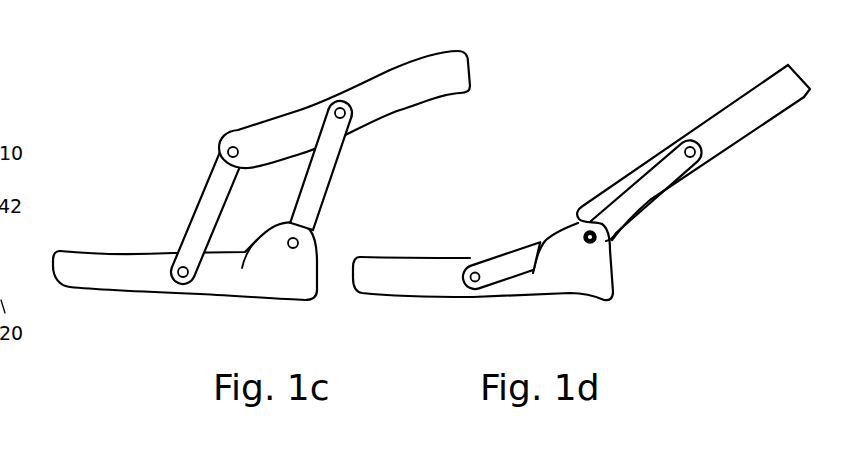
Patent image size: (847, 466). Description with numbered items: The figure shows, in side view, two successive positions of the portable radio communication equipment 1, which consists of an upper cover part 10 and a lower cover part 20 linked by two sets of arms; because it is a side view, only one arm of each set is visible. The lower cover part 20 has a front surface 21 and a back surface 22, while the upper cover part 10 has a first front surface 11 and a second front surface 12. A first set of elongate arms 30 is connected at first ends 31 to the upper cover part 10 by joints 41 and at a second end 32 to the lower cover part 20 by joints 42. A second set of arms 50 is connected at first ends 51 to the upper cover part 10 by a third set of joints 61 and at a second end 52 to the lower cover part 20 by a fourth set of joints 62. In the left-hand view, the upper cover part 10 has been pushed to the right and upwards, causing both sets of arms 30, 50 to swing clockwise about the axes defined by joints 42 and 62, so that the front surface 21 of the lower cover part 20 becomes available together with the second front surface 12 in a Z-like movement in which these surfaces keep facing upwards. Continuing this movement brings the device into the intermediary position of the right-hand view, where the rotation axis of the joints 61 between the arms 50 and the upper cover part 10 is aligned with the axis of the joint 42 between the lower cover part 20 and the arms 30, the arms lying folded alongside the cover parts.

In FIG. 1C, the portable radio communication equipment 1 is at (261, 190).
In FIG. 1D, the portable radio communication equipment 1 is at (581, 204).
In FIG. 1C, the upper cover part 10 is at (344, 88).
In FIG. 1D, the upper cover part 10 is at (693, 142).
In FIG. 1C, the first front surface 11 is at (420, 103).
In FIG. 1D, the first front surface 11 is at (763, 127).
In FIG. 1C, the second front surface 12 is at (268, 118).
In FIG. 1D, the second front surface 12 is at (727, 98).
In FIG. 1C, the lower cover part 20 is at (185, 282).
In FIG. 1D, the lower cover part 20 is at (483, 286).
In FIG. 1C, the front surface 21 is at (112, 252).
In FIG. 1D, the front surface 21 is at (395, 255).
In FIG. 1C, the back surface 22 is at (225, 300).
In FIG. 1D, the back surface 22 is at (433, 300).
In FIG. 1C, the first set of elongate arms 30 is at (312, 136).
In FIG. 1D, the first set of elongate arms 30 is at (655, 187).
In FIG. 1C, the first ends of the arms 31 is at (328, 105).
In FIG. 1C, the second end of the arms 32 is at (317, 230).
In FIG. 1C, the joints 41 is at (339, 104).
In FIG. 1D, the joints 41 is at (678, 140).
In FIG. 1C, the joints 42 is at (299, 243).
In FIG. 1D, the joints 42 is at (598, 245).
In FIG. 1C, the arms 50 is at (183, 228).
In FIG. 1D, the arms 50 is at (520, 247).
In FIG. 1C, the first ends of the arms 51 is at (220, 133).
In FIG. 1C, the second end of the arms 52 is at (181, 293).
In FIG. 1C, the third set of joints 61 is at (227, 152).
In FIG. 1D, the third set of joints 61 is at (590, 237).
In FIG. 1C, the fourth set of joints 62 is at (177, 287).
In FIG. 1D, the fourth set of joints 62 is at (483, 287).